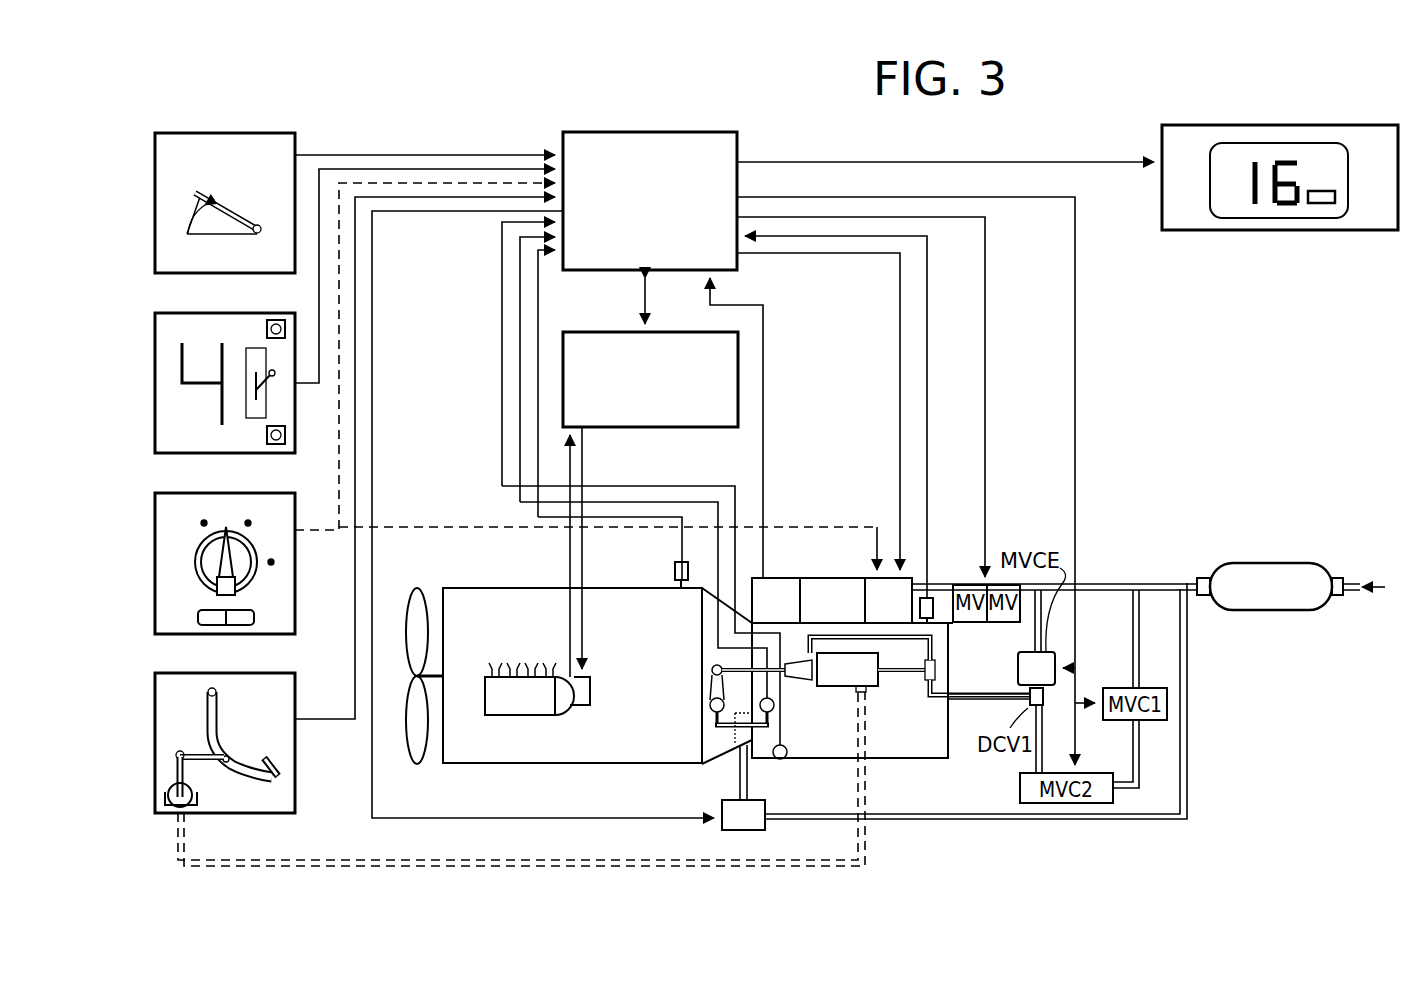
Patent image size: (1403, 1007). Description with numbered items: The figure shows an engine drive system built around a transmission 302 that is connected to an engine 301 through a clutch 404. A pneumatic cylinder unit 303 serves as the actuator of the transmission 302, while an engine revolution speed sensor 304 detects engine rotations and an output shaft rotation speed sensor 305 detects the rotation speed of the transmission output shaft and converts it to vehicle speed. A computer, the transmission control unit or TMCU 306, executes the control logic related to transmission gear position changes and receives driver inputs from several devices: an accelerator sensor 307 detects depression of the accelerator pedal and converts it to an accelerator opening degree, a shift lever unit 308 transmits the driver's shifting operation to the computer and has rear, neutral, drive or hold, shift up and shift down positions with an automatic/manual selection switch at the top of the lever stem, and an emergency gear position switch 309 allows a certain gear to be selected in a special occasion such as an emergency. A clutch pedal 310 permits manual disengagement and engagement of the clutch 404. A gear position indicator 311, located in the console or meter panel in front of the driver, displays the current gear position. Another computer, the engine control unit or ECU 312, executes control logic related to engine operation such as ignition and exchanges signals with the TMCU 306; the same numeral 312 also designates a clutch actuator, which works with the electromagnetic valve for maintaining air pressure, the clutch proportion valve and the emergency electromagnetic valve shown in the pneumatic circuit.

The engine 301 is at (522, 588).
The transmission 302 is at (885, 752).
The pneumatic cylinder unit 303 is at (873, 573).
The engine revolution speed sensor 304 is at (675, 571).
The output shaft rotation speed sensor 305 is at (937, 604).
The transmission control unit (TMCU) 306 is at (680, 132).
The accelerator sensor 307 is at (155, 215).
The shift lever unit 308 is at (155, 396).
The emergency gear position switch 309 is at (155, 576).
The clutch pedal 310 is at (155, 736).
The gear position indicator 311 is at (1293, 125).
The engine control unit (ECU) 312 is at (608, 332).
The clutch 404 is at (720, 758).